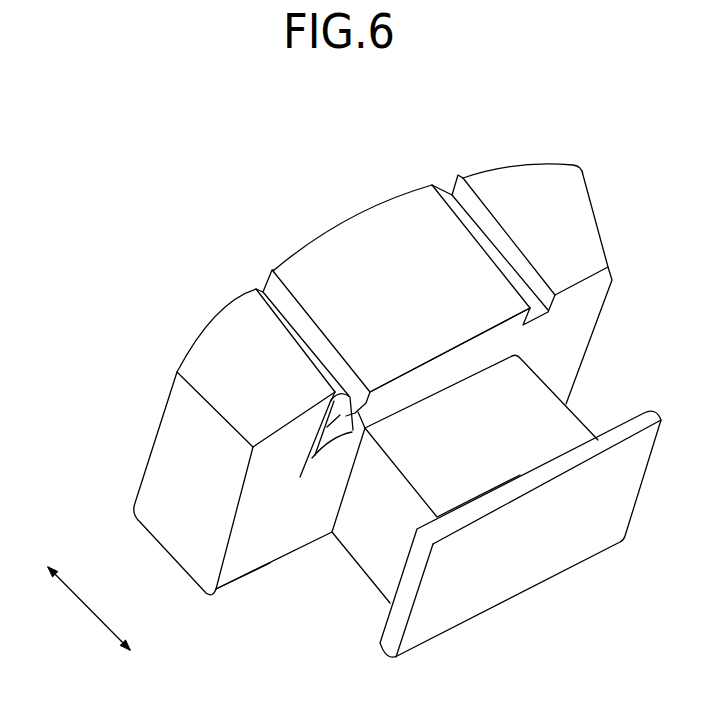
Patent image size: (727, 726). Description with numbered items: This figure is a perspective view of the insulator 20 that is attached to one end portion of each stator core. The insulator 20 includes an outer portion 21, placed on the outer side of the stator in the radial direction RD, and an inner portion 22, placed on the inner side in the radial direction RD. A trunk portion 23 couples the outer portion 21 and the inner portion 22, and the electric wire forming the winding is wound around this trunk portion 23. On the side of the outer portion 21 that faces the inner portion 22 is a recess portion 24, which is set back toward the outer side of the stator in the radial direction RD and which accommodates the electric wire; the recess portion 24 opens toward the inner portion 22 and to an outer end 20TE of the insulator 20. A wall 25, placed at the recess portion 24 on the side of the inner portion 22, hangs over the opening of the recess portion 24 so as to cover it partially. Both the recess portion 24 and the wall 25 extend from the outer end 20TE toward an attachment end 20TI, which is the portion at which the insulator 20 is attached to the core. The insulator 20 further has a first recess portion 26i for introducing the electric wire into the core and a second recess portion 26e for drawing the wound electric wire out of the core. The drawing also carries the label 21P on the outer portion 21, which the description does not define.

The insulator 20 is at (373, 388).
The outer portion 21 is at (220, 345).
The inner portion 22 is at (549, 560).
The trunk portion 23 is at (389, 532).
The recess portion 24 is at (348, 414).
The wall 25 is at (334, 393).
The first recess portion 26i is at (286, 314).
The second recess portion 26e is at (470, 222).
The outer end 20TE is at (391, 229).
The attachment end 20TI is at (338, 551).
The block side surface 21P is at (441, 373).
The radial direction RD is at (82, 602).